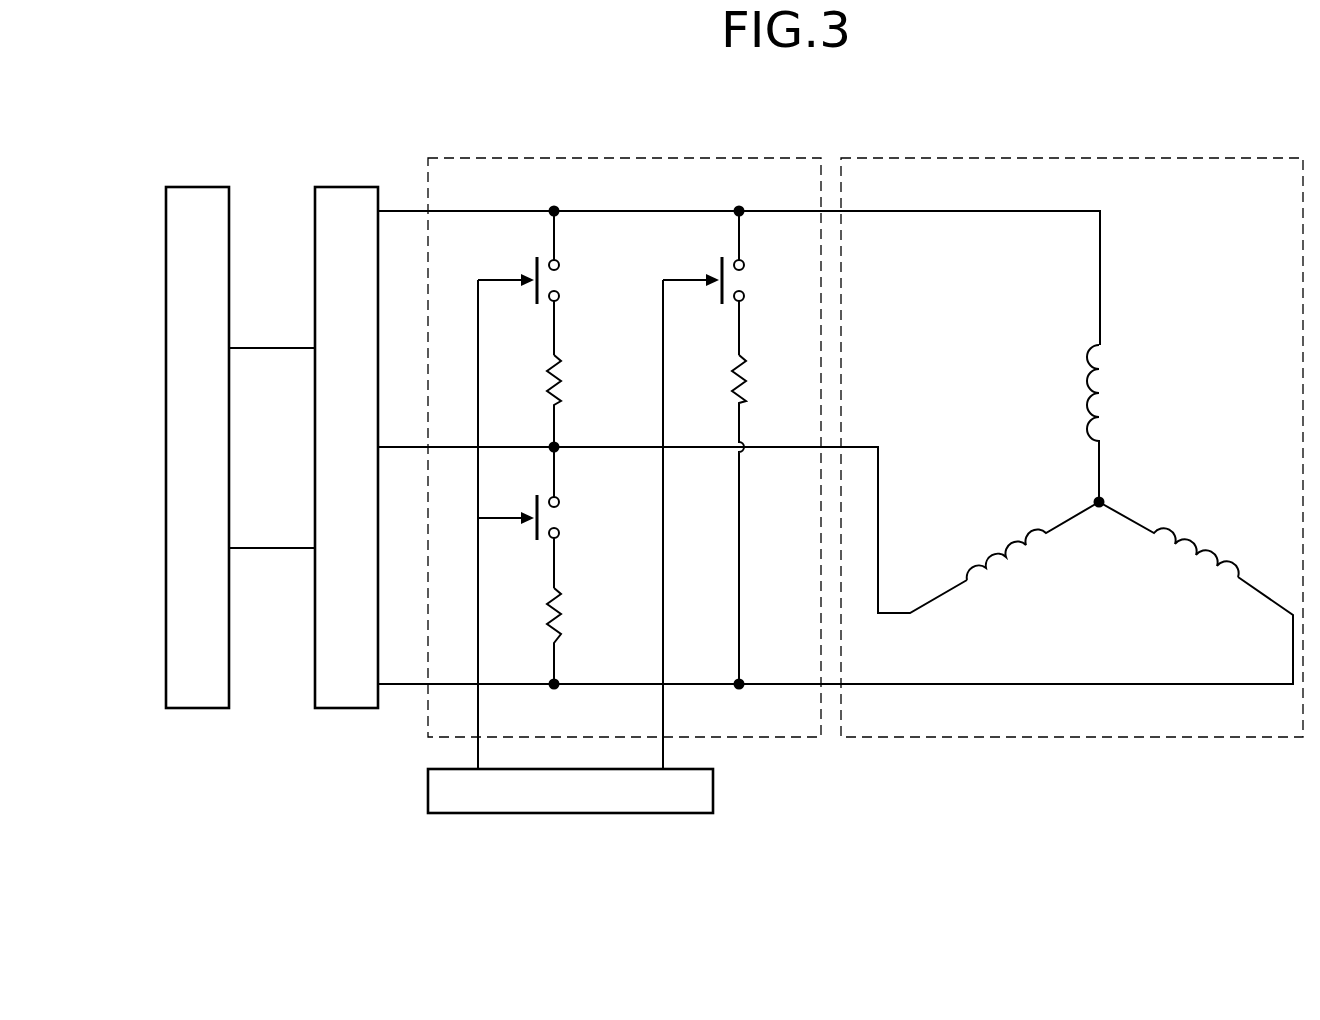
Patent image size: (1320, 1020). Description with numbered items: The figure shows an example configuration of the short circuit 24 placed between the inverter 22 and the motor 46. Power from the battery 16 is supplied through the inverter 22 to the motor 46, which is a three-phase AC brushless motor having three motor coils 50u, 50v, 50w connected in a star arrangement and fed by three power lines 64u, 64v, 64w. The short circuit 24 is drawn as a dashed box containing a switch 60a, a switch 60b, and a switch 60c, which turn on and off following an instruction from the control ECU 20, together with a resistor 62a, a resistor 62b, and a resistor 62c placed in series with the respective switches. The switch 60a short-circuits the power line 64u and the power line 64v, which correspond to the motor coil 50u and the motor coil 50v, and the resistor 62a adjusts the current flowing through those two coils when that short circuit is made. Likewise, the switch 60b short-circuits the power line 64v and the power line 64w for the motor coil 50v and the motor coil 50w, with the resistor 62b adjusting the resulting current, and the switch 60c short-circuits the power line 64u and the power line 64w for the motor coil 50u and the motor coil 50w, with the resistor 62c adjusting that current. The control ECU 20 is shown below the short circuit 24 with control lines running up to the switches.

The battery 16 is at (191, 187).
The inverter 22 is at (338, 187).
The short circuit 24 is at (662, 158).
The motor 46 is at (1078, 158).
The control ECU 20 is at (428, 793).
The switch 60a is at (553, 280).
The switch 60b is at (553, 518).
The switch 60c is at (738, 280).
The resistor 62a is at (562, 380).
The resistor 62b is at (563, 613).
The resistor 62c is at (747, 373).
The motor coil 50u is at (1092, 345).
The motor coil 50v is at (967, 588).
The motor coil 50w is at (1243, 573).
The power line 64u is at (932, 212).
The power line 64v is at (878, 487).
The power line 64w is at (1080, 684).